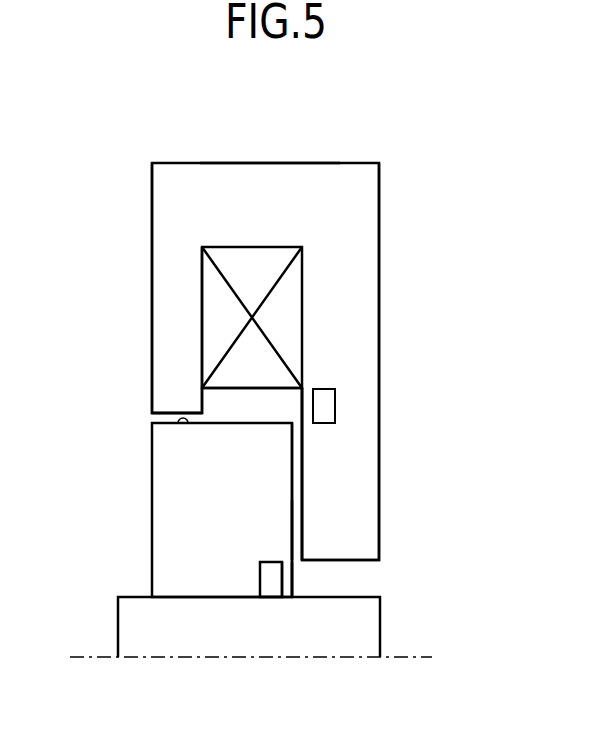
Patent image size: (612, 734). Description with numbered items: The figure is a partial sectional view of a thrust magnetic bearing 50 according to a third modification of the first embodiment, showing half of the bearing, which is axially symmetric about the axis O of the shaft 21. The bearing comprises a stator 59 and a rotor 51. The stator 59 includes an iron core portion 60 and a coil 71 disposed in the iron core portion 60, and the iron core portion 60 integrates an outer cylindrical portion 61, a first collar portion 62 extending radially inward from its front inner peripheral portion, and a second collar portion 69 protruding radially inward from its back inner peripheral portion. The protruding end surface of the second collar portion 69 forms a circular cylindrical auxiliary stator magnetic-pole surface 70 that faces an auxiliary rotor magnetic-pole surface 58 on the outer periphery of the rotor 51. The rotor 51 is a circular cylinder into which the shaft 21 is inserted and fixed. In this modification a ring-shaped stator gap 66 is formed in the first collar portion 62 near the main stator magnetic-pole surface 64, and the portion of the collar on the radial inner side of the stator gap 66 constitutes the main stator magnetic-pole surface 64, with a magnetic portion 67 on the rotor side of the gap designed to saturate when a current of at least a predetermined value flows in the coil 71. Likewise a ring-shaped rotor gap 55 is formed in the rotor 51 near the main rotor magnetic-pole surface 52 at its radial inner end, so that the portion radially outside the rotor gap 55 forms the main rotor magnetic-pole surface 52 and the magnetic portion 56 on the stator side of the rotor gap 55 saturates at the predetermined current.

The axis O is at (84, 655).
The shaft 21 is at (139, 617).
The thrust magnetic bearing 50 is at (163, 133).
The rotor 51 is at (150, 483).
The main rotor magnetic-pole surface 52 is at (296, 524).
The rotor gap 55 is at (272, 580).
The magnetic portion 56 is at (286, 578).
The auxiliary rotor magnetic-pole surface 58 is at (185, 426).
The stator 59 is at (265, 160).
The iron core portion 60 is at (364, 160).
The outer cylindrical portion 61 is at (354, 193).
The first collar portion 62 is at (355, 325).
The main stator magnetic-pole surface 64 is at (299, 455).
The stator gap 66 is at (322, 406).
The magnetic portion 67 is at (308, 398).
The second collar portion 69 is at (170, 295).
The auxiliary stator magnetic-pole surface 70 is at (157, 413).
The coil 71 is at (275, 270).